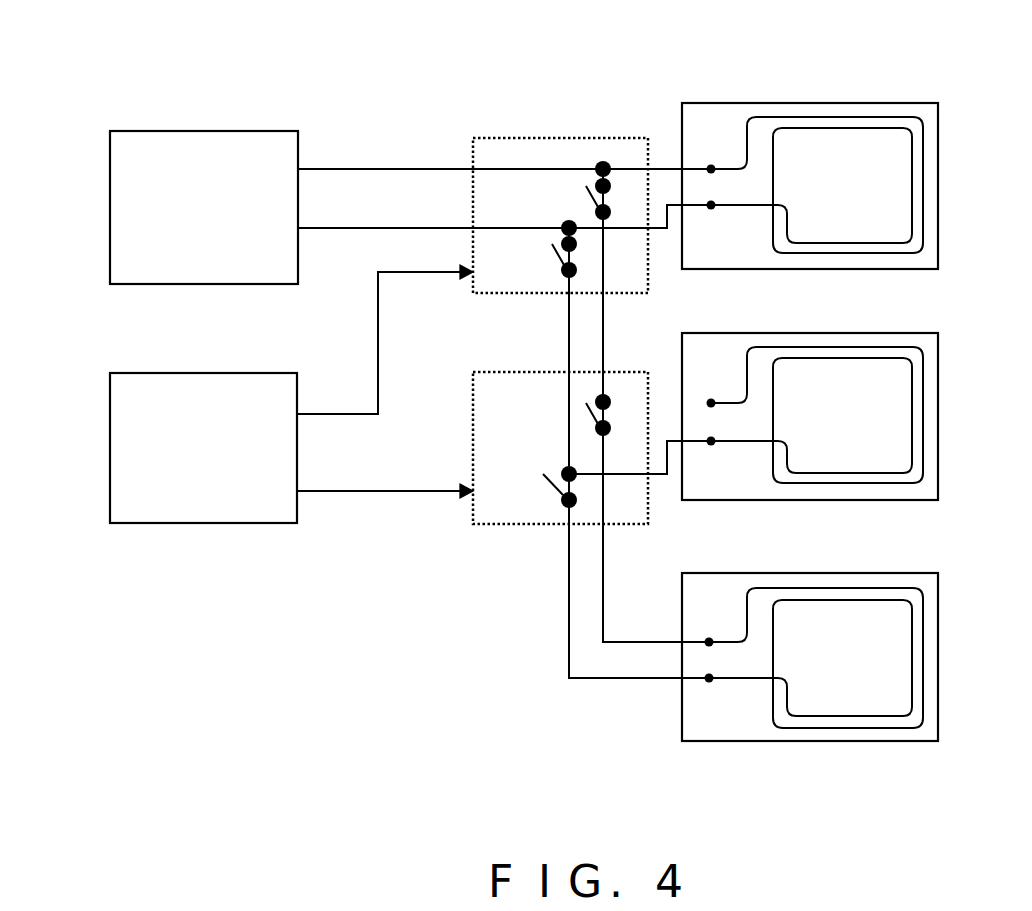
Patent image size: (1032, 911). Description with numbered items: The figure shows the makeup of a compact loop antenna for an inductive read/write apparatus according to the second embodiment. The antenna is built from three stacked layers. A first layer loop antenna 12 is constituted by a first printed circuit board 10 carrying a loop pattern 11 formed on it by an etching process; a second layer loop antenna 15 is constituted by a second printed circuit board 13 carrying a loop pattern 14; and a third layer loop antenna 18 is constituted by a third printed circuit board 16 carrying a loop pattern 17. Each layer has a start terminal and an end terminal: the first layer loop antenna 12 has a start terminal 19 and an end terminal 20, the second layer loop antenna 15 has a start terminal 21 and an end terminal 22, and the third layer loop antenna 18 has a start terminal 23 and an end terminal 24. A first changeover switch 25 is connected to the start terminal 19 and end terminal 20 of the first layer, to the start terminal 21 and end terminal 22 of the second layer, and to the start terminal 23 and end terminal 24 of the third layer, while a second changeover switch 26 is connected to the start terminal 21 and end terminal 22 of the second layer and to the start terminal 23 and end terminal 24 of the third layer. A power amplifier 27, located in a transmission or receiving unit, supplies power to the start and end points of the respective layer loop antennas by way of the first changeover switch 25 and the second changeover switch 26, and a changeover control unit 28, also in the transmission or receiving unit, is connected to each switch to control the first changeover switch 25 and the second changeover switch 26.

The first printed circuit board 10 is at (938, 152).
The loop pattern 11 is at (923, 230).
The first layer loop antenna 12 is at (850, 142).
The second printed circuit board 13 is at (938, 392).
The loop pattern 14 is at (923, 462).
The second layer loop antenna 15 is at (850, 379).
The third printed circuit board 16 is at (938, 628).
The loop pattern 17 is at (923, 707).
The third layer loop antenna 18 is at (848, 621).
The start terminal 19 is at (690, 169).
The end terminal 20 is at (690, 202).
The start terminal 21 is at (690, 403).
The end terminal 22 is at (690, 437).
The start terminal 23 is at (690, 640).
The end terminal 24 is at (690, 680).
The first changeover switch 25 is at (495, 138).
The second changeover switch 26 is at (487, 372).
The power amplifier 27 is at (243, 131).
The changeover control unit 28 is at (228, 373).